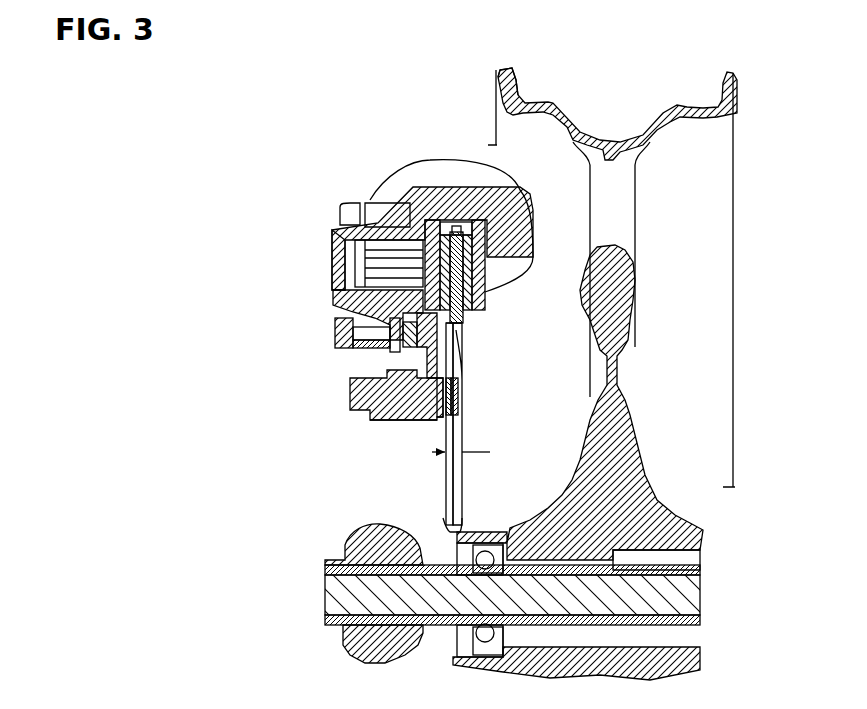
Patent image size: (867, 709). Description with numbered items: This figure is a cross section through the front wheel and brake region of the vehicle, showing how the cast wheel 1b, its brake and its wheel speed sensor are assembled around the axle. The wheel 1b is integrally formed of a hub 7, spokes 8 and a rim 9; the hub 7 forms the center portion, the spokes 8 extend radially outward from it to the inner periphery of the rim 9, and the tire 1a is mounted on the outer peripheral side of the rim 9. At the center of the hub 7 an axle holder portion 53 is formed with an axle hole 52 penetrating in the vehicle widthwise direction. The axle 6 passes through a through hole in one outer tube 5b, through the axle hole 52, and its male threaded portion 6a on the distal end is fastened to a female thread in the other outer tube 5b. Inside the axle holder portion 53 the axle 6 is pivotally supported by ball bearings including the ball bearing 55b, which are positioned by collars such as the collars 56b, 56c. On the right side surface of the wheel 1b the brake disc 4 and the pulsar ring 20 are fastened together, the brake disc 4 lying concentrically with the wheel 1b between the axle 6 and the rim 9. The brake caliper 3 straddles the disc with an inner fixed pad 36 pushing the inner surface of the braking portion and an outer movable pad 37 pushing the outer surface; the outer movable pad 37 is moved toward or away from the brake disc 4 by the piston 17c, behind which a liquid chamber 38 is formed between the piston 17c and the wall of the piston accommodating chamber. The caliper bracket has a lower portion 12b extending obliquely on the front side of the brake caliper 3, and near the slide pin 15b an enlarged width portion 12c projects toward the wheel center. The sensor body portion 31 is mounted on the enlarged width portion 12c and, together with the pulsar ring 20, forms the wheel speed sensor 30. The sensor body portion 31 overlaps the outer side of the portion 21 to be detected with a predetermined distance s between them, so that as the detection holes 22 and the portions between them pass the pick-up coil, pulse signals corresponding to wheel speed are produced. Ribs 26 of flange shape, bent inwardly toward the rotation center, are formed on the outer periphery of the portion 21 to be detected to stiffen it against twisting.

The tire 1a is at (470, 300).
The wheel 1b is at (491, 79).
The brake caliper 3 is at (410, 152).
The brake disc 4 is at (464, 328).
The outer tube 5b is at (345, 537).
The axle 6 is at (400, 609).
The male threaded portion 6a is at (325, 605).
The hub 7 is at (638, 445).
The spoke 8 is at (630, 205).
The rim 9 is at (677, 120).
The lower portion 12b is at (437, 357).
The enlarged width portion 12c is at (400, 418).
The slide pin 15b is at (340, 330).
The piston 17c is at (405, 252).
The pulsar ring 20 is at (443, 488).
The portion to be detected 21 is at (450, 388).
The detection hole 22 is at (457, 405).
The rib 26 is at (463, 487).
The wheel speed sensor 30 is at (435, 424).
The sensor body portion 31 is at (350, 395).
The inner fixed pad 36 is at (468, 220).
The outer movable pad 37 is at (452, 220).
The liquid chamber 38 is at (346, 244).
The axle hole 52 is at (703, 545).
The axle holder portion 53 is at (448, 520).
The ball bearing 55b is at (487, 650).
The collar 56b is at (677, 625).
The collar 56c is at (423, 630).
The predetermined distance s is at (467, 452).